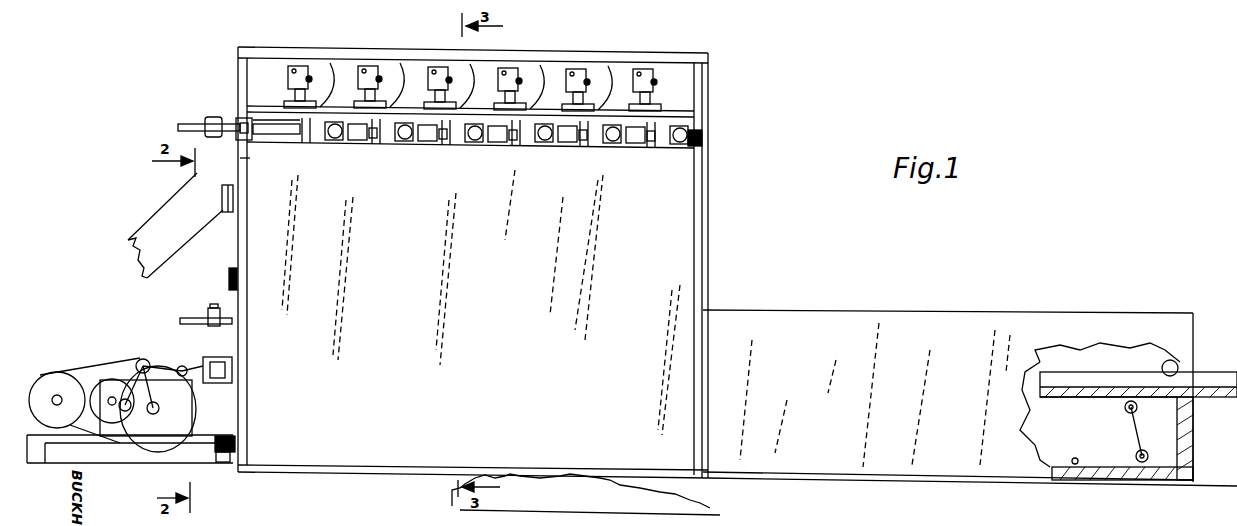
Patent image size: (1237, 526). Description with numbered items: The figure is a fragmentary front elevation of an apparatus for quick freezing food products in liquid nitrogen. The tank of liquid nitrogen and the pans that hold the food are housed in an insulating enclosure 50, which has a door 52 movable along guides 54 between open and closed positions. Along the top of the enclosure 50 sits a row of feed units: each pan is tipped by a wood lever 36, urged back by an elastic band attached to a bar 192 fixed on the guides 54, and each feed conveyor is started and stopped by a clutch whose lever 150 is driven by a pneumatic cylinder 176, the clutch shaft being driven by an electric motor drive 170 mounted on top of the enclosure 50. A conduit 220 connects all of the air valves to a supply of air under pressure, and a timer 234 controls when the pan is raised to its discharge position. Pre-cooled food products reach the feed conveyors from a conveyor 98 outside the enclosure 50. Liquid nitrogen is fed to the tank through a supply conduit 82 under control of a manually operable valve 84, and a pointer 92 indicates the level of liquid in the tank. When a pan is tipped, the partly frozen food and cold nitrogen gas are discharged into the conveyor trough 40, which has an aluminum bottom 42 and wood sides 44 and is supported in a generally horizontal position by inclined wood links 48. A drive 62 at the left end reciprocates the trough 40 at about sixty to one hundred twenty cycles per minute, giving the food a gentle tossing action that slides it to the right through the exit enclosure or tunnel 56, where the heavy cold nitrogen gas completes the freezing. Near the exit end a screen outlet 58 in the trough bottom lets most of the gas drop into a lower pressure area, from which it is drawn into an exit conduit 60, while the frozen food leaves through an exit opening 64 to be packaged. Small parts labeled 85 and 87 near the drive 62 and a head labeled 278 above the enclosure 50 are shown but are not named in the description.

The wood lever 36 is at (388, 147).
The conveyor trough 40 is at (222, 362).
The aluminum bottom 42 is at (1217, 405).
The wood sides 44 is at (1045, 372).
The wood links 48 is at (1136, 437).
The insulating enclosure 50 is at (708, 234).
The door 52 is at (240, 158).
The guides 54 is at (240, 133).
The exit enclosure or tunnel 56 is at (965, 330).
The screen outlet 58 is at (1083, 400).
The exit conduit 60 is at (1040, 450).
The drive 62 is at (108, 366).
The exit opening 64 is at (1166, 362).
The supply conduit 82 is at (188, 318).
The manually operable valve 84 is at (213, 312).
The bracket 85 is at (212, 464).
The block 87 is at (236, 440).
The pointer 92 is at (237, 277).
The conveyor 98 is at (130, 243).
The lever 150 is at (360, 147).
The electric motor drive 170 is at (254, 125).
The pneumatic cylinder 176 is at (410, 147).
The bar 192 is at (250, 100).
The conduit 220 is at (292, 138).
The timer 234 is at (225, 198).
The feed heads 278 is at (300, 62).